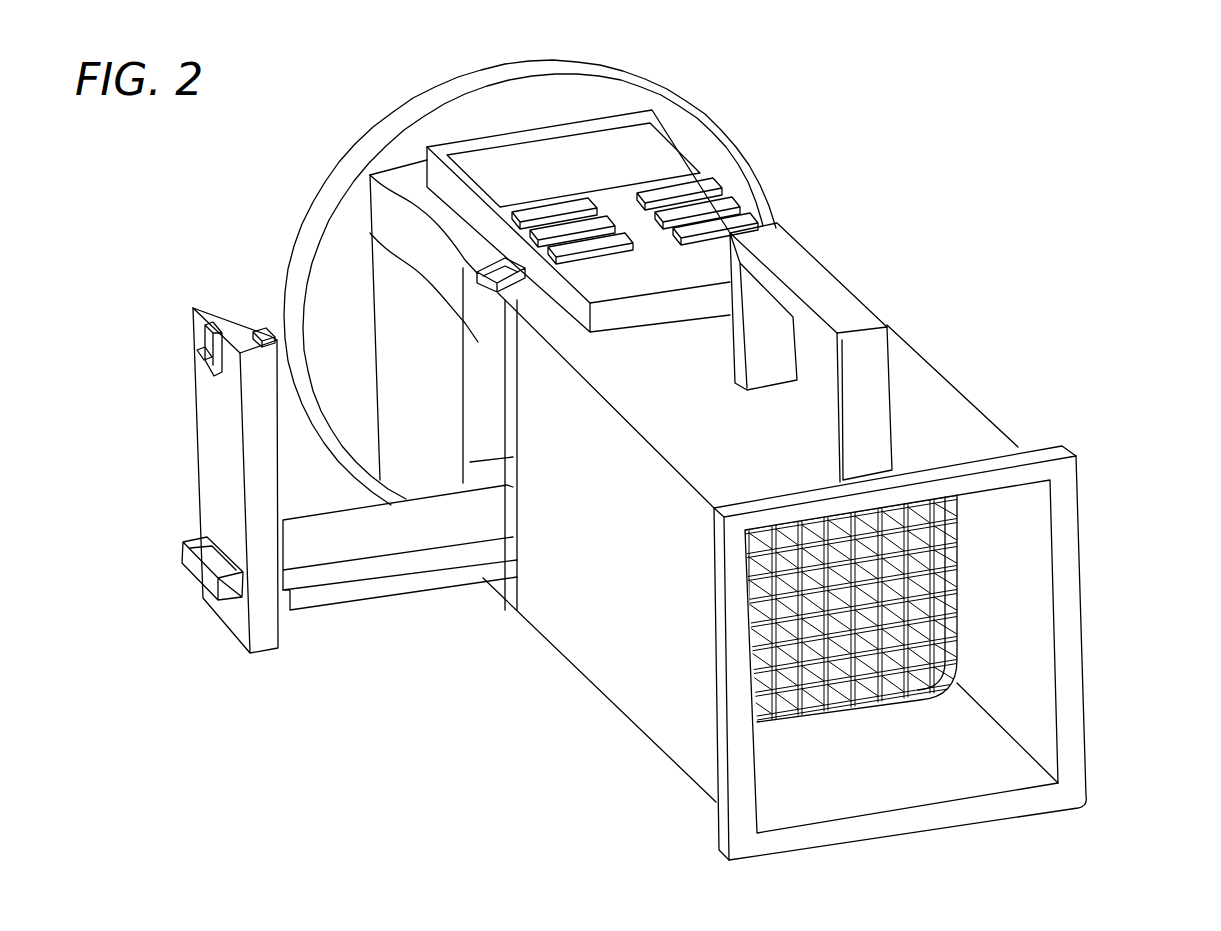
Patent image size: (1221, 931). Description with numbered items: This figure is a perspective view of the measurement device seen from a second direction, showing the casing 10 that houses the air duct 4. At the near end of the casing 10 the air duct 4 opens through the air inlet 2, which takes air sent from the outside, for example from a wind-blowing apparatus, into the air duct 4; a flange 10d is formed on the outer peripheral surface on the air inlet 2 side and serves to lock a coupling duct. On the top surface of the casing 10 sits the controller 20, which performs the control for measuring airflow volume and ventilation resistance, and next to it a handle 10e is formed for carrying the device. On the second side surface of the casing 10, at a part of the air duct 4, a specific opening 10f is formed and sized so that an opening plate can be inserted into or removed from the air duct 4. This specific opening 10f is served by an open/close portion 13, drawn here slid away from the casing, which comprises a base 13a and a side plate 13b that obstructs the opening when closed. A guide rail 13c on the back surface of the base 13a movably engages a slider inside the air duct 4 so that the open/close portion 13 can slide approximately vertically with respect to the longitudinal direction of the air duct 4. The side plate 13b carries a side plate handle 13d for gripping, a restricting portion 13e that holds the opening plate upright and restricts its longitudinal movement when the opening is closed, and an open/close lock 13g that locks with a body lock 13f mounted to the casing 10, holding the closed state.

The air inlet 2 is at (1020, 690).
The air duct 4 is at (888, 757).
The casing 10 is at (927, 403).
The flange 10d is at (1053, 473).
The handle 10e is at (840, 300).
The specific opening 10f is at (478, 342).
The open/close portion 13 is at (184, 412).
The base 13a is at (335, 575).
The side plate 13b is at (260, 637).
The guide rail 13c is at (415, 583).
The side plate handle 13d is at (203, 573).
The restricting portion 13e is at (264, 334).
The body lock 13f is at (372, 174).
The open/close lock 13g is at (213, 325).
The controller 20 is at (710, 172).